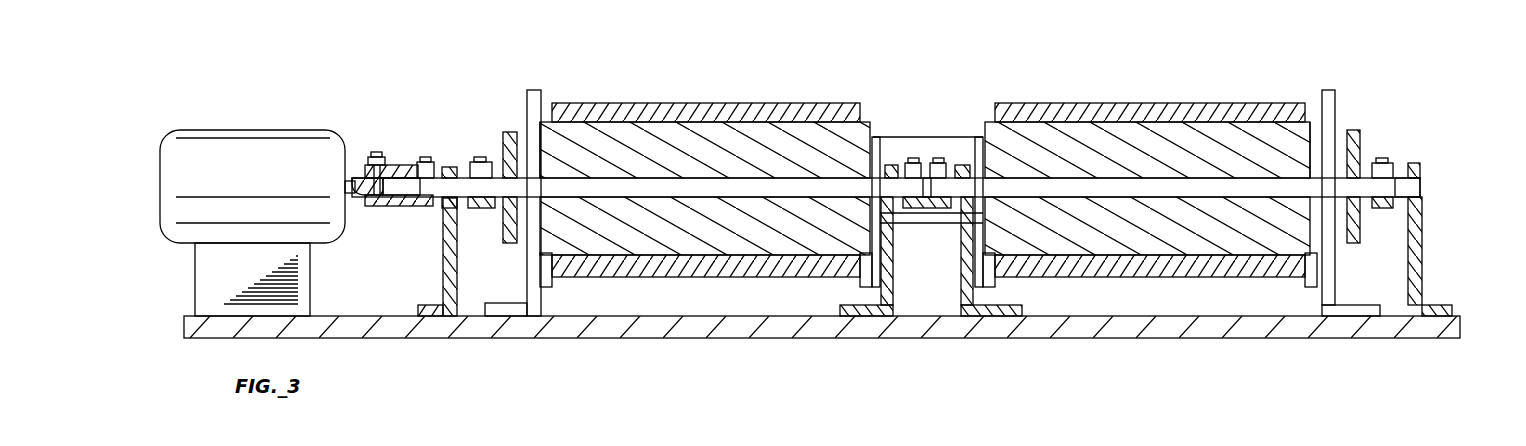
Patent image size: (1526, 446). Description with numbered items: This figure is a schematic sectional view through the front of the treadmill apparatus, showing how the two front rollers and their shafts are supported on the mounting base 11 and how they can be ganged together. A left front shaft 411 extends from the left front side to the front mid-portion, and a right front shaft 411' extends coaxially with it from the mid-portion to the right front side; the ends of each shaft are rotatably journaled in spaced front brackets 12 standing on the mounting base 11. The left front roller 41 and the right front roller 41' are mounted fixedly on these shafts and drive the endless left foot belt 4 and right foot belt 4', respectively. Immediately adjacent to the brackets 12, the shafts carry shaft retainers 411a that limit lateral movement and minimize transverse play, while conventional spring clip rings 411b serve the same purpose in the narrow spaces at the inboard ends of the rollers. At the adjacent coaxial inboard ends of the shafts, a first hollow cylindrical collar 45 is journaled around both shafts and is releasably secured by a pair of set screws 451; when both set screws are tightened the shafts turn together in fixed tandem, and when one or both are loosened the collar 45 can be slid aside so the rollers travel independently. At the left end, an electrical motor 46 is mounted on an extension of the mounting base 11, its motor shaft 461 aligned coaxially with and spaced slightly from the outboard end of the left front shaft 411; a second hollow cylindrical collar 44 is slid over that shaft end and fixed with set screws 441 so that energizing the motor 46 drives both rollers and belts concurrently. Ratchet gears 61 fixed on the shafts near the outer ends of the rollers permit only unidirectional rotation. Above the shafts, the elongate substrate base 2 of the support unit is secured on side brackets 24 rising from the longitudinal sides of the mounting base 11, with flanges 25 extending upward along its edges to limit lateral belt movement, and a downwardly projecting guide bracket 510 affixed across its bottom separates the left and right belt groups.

The substrate base 2 is at (927, 140).
The left foot belt 4 is at (706, 174).
The right foot belt 4' is at (1146, 174).
The mounting base 11 is at (637, 320).
The front bracket 12 is at (443, 265).
The side bracket 24 is at (515, 300).
The flange 25 is at (527, 92).
The left front roller 41 is at (521, 171).
The right front roller 41' is at (1361, 191).
The second hollow cylindrical collar 44 is at (413, 210).
The first hollow cylindrical collar 45 is at (925, 205).
The electrical motor 46 is at (265, 150).
The ratchet gear 61 is at (508, 250).
The left front shaft 411 is at (882, 132).
The right front shaft 411' is at (1430, 183).
The shaft retainer 411a is at (490, 160).
The spring clip ring 411b is at (875, 140).
The set screw 441 is at (378, 160).
The set screw 451 is at (928, 177).
The motor shaft 461 is at (363, 168).
The guide bracket 510 is at (905, 300).